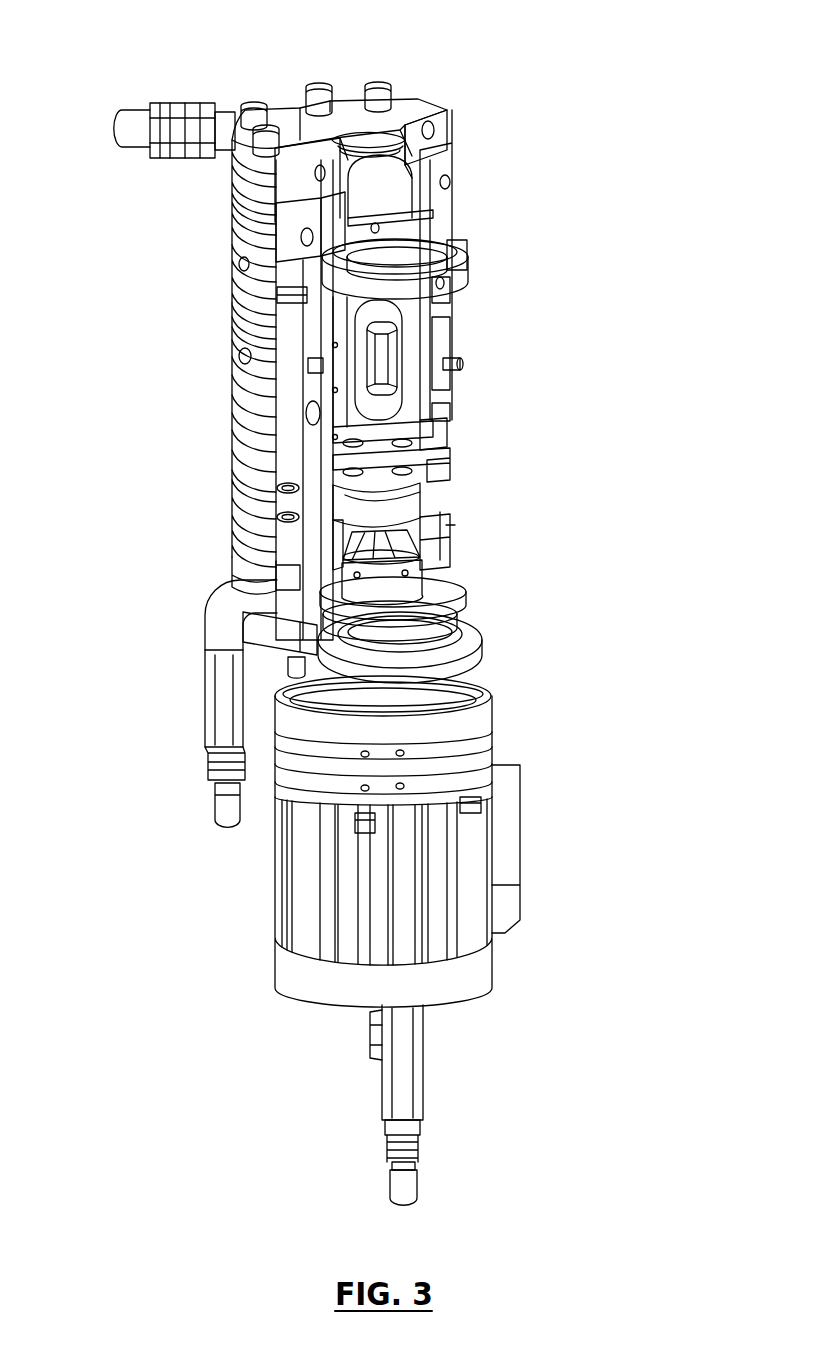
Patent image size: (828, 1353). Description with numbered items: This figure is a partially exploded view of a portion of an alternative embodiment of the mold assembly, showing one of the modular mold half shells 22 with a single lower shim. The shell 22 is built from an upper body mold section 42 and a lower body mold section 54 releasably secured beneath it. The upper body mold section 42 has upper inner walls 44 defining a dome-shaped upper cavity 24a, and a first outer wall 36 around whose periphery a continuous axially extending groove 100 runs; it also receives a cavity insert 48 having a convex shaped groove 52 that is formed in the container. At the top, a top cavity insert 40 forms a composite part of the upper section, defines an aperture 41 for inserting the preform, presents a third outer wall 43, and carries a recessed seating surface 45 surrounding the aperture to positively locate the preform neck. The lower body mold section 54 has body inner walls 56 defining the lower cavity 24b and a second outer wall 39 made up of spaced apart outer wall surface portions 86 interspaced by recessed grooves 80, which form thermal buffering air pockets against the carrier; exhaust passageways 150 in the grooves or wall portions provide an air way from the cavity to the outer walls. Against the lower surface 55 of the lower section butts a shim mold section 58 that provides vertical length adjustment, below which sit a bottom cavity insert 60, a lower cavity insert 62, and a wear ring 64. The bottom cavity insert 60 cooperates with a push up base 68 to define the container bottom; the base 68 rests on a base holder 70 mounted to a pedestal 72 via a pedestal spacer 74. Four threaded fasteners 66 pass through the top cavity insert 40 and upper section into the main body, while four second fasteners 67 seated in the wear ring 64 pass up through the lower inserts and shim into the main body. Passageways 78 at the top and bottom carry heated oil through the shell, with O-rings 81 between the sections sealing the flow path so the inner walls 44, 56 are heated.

The modular mold half shell 22 is at (505, 338).
The upper cavity 24a is at (397, 207).
The lower cavity 24b is at (410, 430).
The first outer wall 36 is at (232, 198).
The second outer wall 39 is at (232, 310).
The top cavity insert 40 is at (445, 126).
The aperture 41 is at (392, 138).
The upper body mold section 42 is at (218, 232).
The third outer wall 43 is at (452, 108).
The upper inner wall 44 is at (395, 168).
The seating surface 45 is at (362, 128).
The cavity insert 48 is at (468, 256).
The convex shaped groove 52 is at (455, 240).
The lower body mold section 54 is at (185, 420).
The lower surface 55 is at (455, 436).
The body inner wall 56 is at (400, 312).
The shim mold section 58 is at (455, 466).
The bottom cavity insert 60 is at (455, 490).
The lower cavity insert 62 is at (447, 540).
The wear ring 64 is at (482, 647).
The fastener 66 is at (254, 105).
The second fastener 67 is at (292, 666).
The push up base 68 is at (450, 574).
The base holder 70 is at (494, 712).
The pedestal 72 is at (492, 888).
The pedestal spacer 74 is at (488, 746).
The passageway 78 is at (212, 103).
The groove 80 is at (232, 362).
The O-ring 81 is at (232, 283).
The outer wall surface portion 86 is at (232, 380).
The groove 100 is at (232, 212).
The exhaust passageway 150 is at (232, 342).